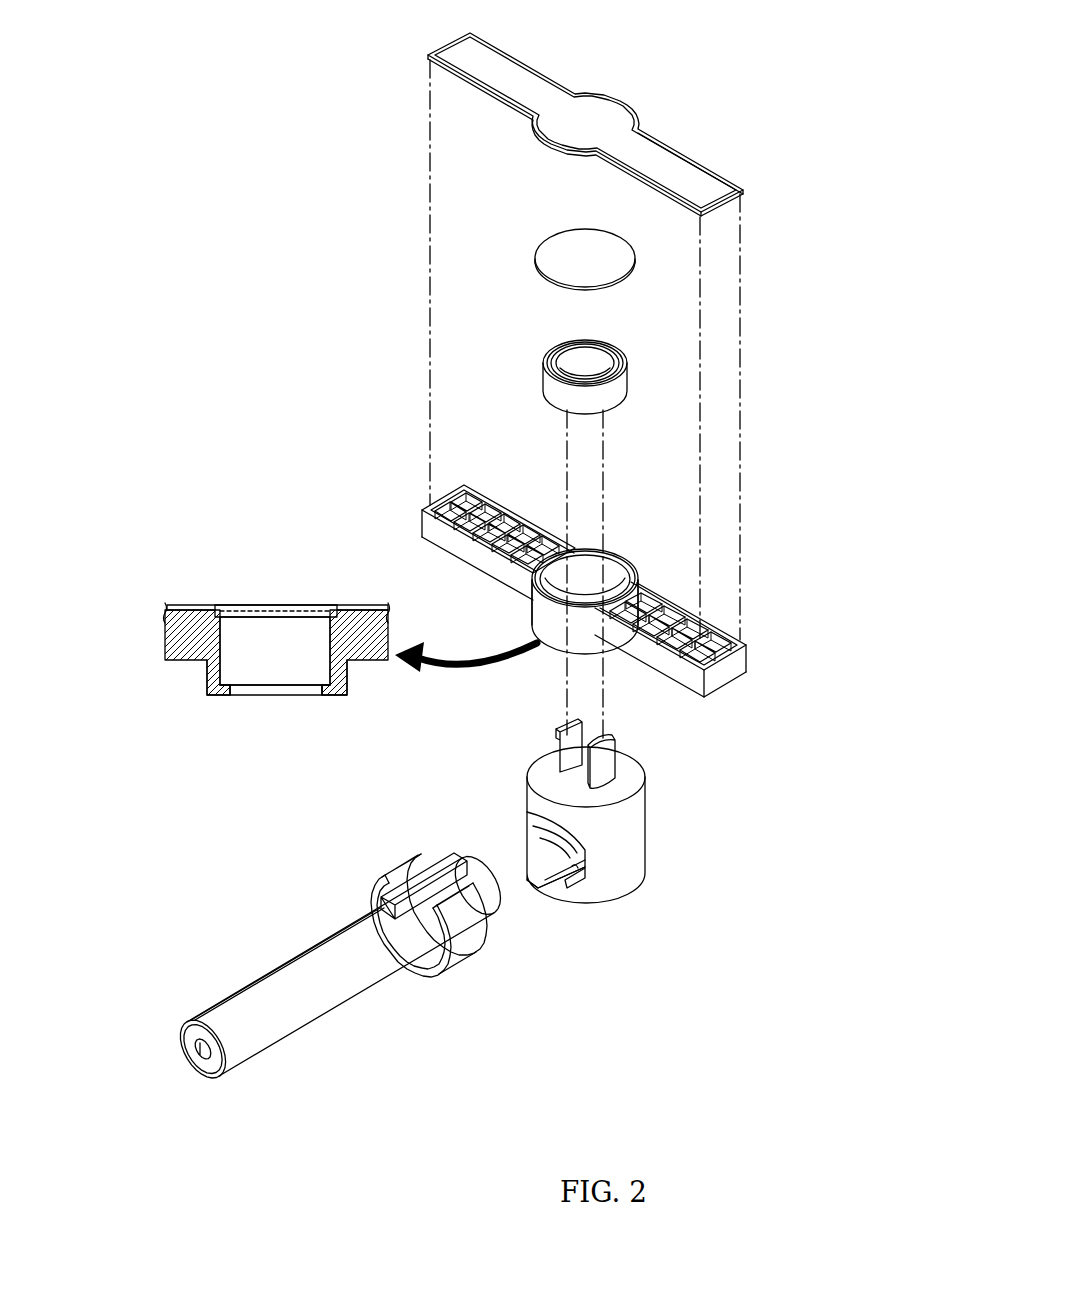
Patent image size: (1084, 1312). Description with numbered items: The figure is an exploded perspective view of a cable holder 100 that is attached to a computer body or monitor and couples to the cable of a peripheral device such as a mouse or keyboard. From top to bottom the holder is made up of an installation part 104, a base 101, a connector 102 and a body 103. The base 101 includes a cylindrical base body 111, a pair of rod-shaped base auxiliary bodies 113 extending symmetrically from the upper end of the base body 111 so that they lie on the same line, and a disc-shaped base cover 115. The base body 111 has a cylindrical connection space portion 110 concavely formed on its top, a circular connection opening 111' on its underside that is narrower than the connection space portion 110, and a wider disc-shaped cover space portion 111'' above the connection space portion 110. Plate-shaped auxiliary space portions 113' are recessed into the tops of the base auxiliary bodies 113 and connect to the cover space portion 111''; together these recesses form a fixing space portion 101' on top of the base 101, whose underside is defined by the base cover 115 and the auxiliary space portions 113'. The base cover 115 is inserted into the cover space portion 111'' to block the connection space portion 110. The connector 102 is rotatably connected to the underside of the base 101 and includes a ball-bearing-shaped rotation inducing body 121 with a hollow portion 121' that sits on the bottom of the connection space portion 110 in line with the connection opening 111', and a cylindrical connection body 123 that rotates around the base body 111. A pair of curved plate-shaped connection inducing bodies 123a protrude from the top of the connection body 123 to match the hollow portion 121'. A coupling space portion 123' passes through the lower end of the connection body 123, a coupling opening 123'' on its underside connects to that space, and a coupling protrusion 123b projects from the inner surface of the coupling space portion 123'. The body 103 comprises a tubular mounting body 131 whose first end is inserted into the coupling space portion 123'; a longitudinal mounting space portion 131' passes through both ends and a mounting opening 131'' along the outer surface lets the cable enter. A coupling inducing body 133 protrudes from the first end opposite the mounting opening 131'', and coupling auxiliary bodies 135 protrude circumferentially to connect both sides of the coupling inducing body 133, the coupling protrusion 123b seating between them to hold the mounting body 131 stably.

The cable holder 100 is at (300, 42).
The installation part 104 is at (691, 145).
The base cover 115 is at (548, 268).
The rotation inducing body 121 is at (555, 355).
The hollow portion 121' is at (615, 335).
The base 101 is at (614, 594).
The fixing space portion 101' is at (836, 499).
The connector 102 is at (812, 908).
The connection space portion 110 is at (586, 560).
The base body 111 is at (426, 634).
The connection opening 111' is at (424, 670).
The cover space portion 111'' is at (437, 533).
The base auxiliary bodies 113 is at (463, 592).
The auxiliary space portions 113' is at (480, 544).
The connection body 123 is at (622, 825).
The connection inducing bodies 123a is at (527, 778).
The coupling space portion 123' is at (512, 831).
The coupling opening 123'' is at (556, 922).
The coupling protrusion 123b is at (570, 890).
The body 103 is at (284, 922).
The mounting body 131 is at (341, 976).
The mounting space portion 131' is at (164, 1068).
The mounting opening 131'' is at (287, 964).
The coupling inducing body 133 is at (445, 958).
The coupling auxiliary bodies 135 is at (445, 866).